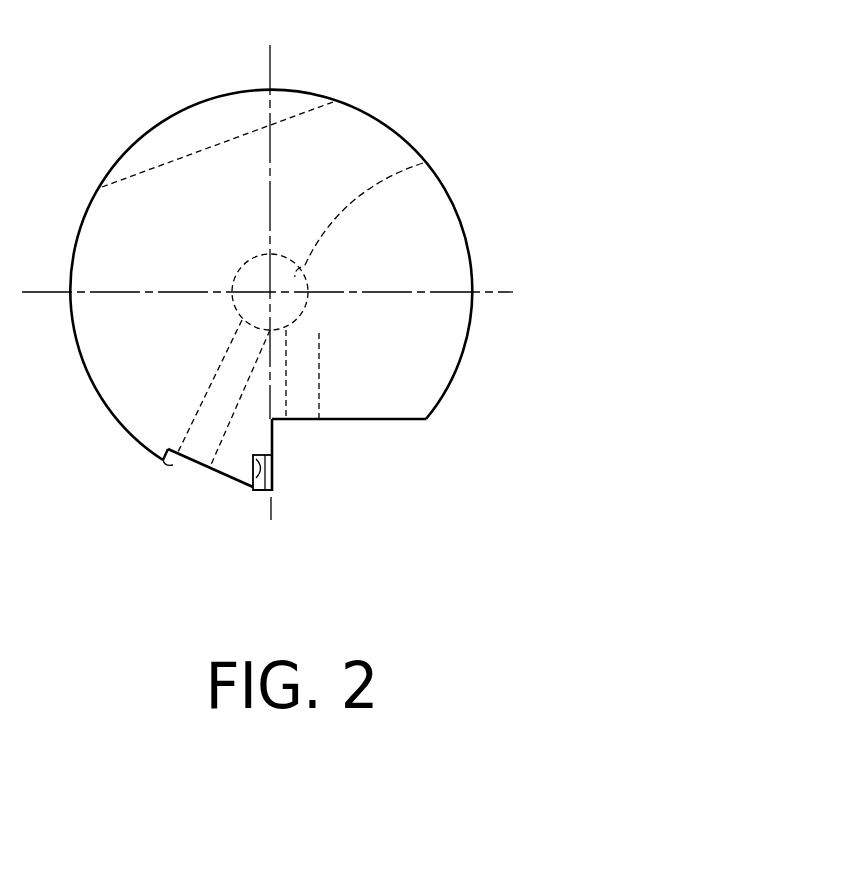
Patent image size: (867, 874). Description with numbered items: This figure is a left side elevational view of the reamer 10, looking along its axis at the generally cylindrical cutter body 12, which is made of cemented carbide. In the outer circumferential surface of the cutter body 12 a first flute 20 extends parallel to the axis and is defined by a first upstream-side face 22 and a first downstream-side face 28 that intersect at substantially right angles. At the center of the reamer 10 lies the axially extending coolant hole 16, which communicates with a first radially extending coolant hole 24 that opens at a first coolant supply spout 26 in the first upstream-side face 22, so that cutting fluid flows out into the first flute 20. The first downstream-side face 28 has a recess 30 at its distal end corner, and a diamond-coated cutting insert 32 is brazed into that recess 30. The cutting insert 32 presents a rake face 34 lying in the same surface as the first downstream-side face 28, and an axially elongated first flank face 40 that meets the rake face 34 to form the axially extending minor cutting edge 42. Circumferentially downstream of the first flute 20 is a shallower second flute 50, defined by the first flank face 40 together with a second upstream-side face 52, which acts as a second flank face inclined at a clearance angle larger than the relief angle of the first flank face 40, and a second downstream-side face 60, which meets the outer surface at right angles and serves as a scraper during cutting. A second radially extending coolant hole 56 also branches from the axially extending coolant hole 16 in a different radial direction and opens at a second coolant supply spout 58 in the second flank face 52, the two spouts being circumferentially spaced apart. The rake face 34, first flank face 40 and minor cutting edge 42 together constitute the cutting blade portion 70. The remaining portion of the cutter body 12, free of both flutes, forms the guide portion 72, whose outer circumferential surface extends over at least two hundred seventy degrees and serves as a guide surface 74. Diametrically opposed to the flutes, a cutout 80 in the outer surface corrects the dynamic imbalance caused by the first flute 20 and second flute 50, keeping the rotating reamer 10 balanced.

The reamer 10 is at (390, 70).
The cutter body 12 is at (310, 82).
The axially extending coolant hole 16 is at (423, 163).
The first flute 20 is at (320, 455).
The first upstream-side face 22 is at (410, 421).
The first radially extending coolant hole 24 is at (310, 350).
The first coolant supply spout 26 is at (317, 427).
The first downstream-side face 28 is at (273, 470).
The recess 30 is at (237, 478).
The cutting insert 32 is at (273, 487).
The rake face 34 is at (273, 480).
The first flank face 40 is at (258, 491).
The minor cutting edge 42 is at (268, 492).
The second flute 50 is at (167, 478).
The second upstream-side face 52 is at (220, 472).
The second radially extending coolant hole 56 is at (220, 377).
The second coolant supply spout 58 is at (183, 477).
The second downstream-side face 60 is at (172, 463).
The cutting blade portion 70 is at (283, 503).
The guide portion 72 is at (483, 215).
The guide surface 74 is at (398, 133).
The cutout 80 is at (183, 157).